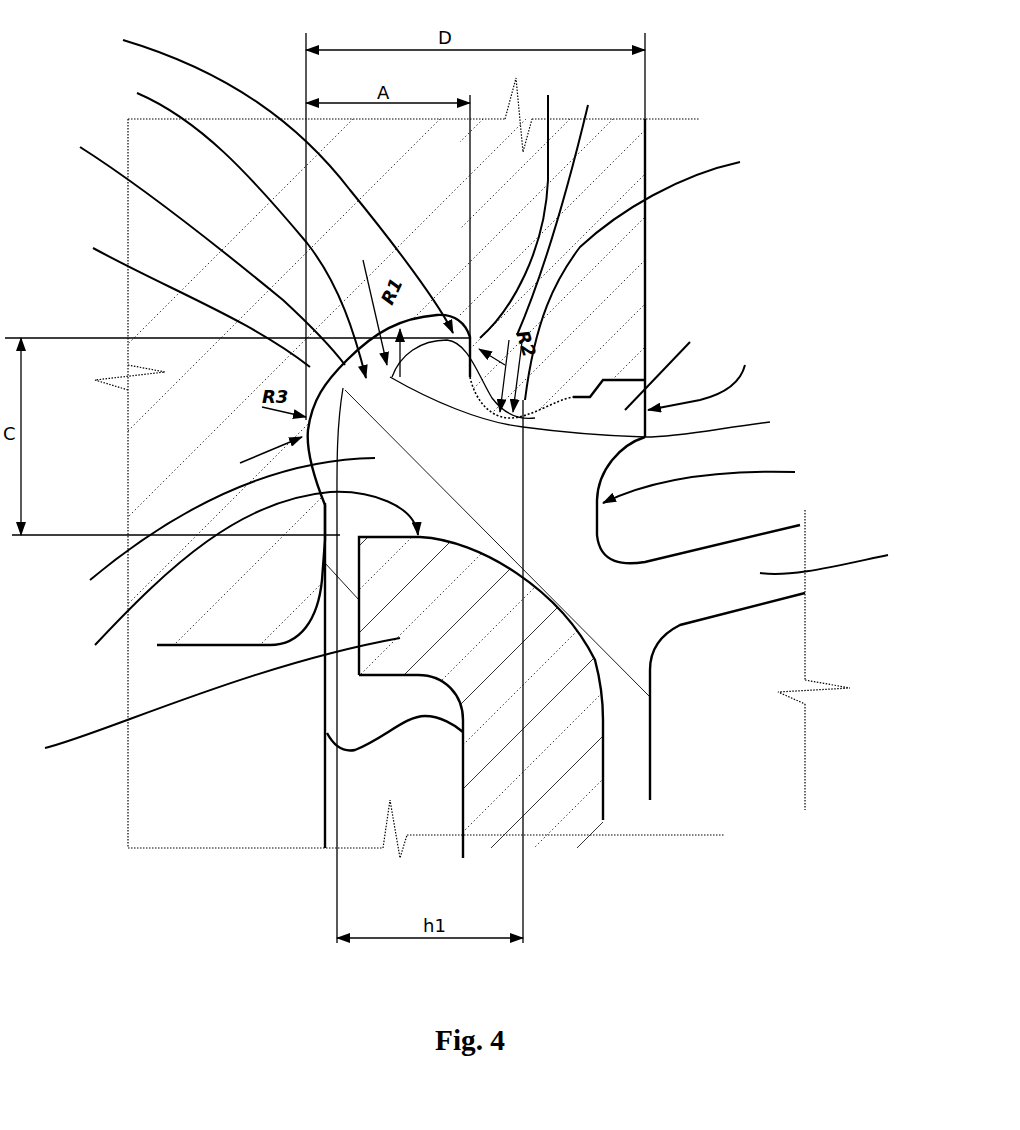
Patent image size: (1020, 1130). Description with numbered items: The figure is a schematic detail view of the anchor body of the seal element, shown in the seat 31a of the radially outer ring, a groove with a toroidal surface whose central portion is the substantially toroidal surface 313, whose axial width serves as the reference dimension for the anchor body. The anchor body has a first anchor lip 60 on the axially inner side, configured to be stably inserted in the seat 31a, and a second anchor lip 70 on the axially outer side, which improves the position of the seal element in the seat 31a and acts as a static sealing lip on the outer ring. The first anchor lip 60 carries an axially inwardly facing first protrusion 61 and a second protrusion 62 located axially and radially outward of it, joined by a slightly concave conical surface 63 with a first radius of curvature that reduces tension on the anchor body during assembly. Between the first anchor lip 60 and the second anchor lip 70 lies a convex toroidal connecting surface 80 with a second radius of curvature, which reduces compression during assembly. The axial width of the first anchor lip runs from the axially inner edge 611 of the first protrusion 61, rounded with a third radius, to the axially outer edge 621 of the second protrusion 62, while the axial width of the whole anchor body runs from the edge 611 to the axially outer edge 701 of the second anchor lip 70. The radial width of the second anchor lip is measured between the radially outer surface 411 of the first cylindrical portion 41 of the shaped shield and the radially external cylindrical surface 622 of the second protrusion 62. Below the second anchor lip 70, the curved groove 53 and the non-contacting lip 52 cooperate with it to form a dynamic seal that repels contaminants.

The cylindrical surface 622 is at (260, 174).
The seat 31a is at (228, 220).
The slightly concave conical surface 63 is at (191, 249).
The first protrusion 61 is at (181, 306).
The axially inner edge 611 is at (250, 456).
The first anchor lip 60 is at (208, 533).
The radially outer surface 411 is at (231, 585).
The first cylindrical portion 41 is at (222, 698).
The second protrusion 62 is at (518, 208).
The axially outer edge 621 is at (562, 206).
The connecting surface 80 is at (651, 277).
The second anchor lip 70 is at (671, 362).
The axially outer edge 701 is at (716, 375).
The toroidal surface 313 is at (732, 423).
The groove 53 is at (715, 483).
The non-contacting lip 52 is at (843, 561).